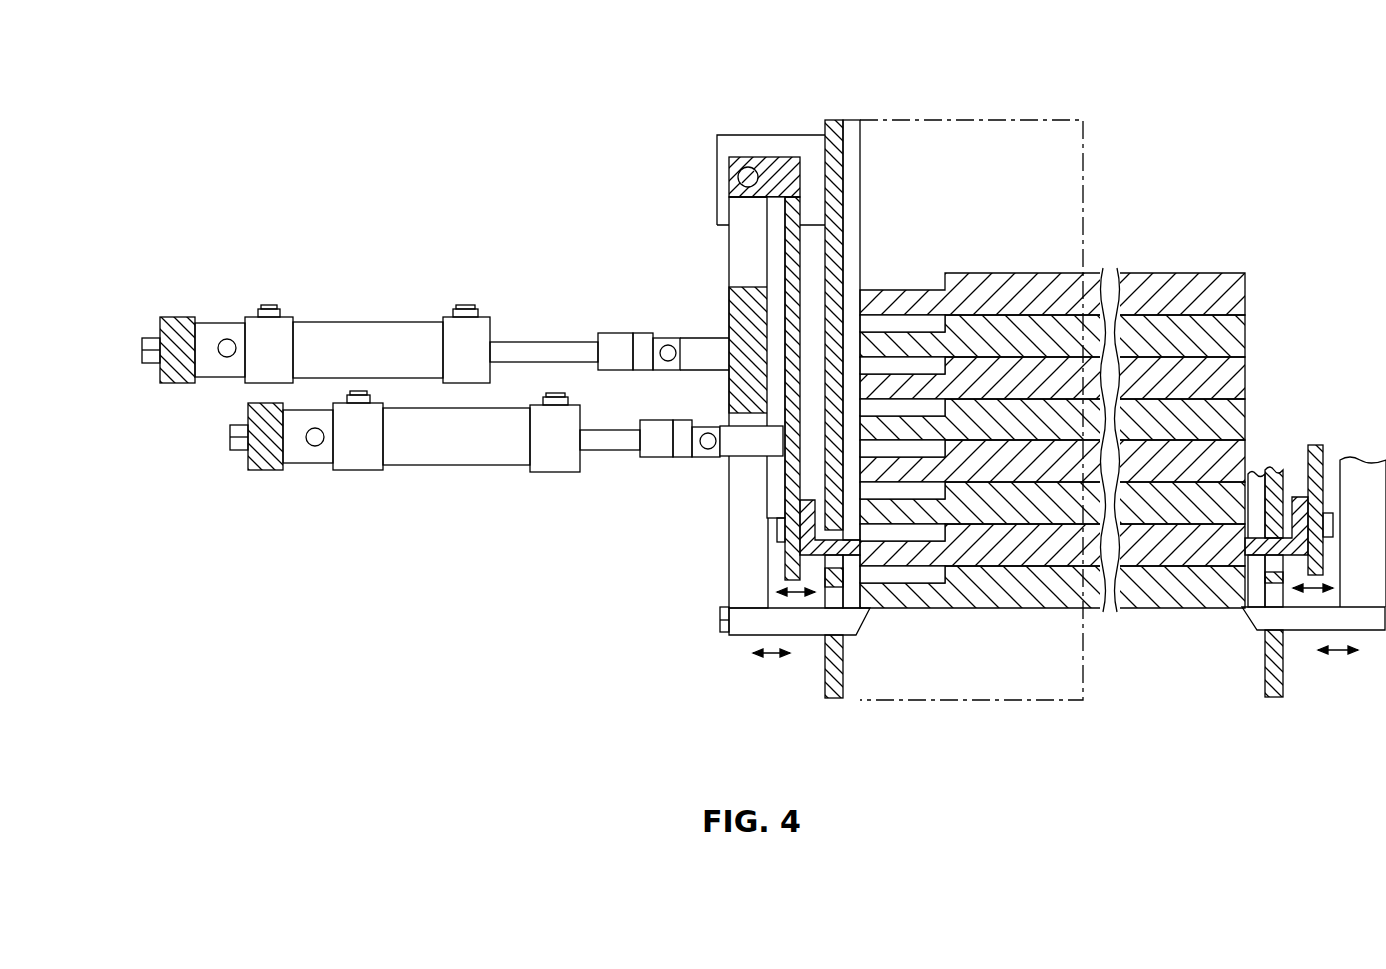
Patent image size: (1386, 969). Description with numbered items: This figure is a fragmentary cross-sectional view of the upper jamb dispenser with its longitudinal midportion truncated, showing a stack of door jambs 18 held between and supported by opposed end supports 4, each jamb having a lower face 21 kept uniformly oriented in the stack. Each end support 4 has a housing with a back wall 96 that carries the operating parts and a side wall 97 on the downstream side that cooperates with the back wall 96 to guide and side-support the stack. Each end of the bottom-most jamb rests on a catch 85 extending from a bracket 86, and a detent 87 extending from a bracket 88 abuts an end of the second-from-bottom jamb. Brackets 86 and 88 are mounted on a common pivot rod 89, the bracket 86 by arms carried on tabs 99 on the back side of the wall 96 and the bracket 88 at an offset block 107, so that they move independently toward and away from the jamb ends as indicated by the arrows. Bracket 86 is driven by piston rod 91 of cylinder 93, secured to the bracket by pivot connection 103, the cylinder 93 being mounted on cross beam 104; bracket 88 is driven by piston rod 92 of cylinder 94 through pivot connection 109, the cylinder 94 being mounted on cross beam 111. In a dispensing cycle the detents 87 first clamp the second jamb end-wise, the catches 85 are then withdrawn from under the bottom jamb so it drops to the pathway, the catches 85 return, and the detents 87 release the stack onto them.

The end support 4 is at (833, 127).
The door jamb 18 is at (1240, 380).
The lower face 21 is at (920, 368).
The catch 85 is at (805, 640).
The bracket 86 is at (729, 320).
The detent 87 is at (810, 547).
The bracket 88 is at (797, 257).
The pivot rod 89 is at (740, 177).
The piston rod 91 is at (541, 341).
The piston rod 92 is at (600, 452).
The cylinder 93 is at (349, 364).
The cylinder 94 is at (447, 457).
The back wall 96 is at (825, 133).
The side wall 97 is at (920, 142).
The tab 99 is at (745, 147).
The pivot connection 103 is at (668, 345).
The cross beam 104 is at (163, 317).
The offset block 107 is at (757, 195).
The pivot connection 109 is at (708, 433).
The cross beam 111 is at (267, 468).